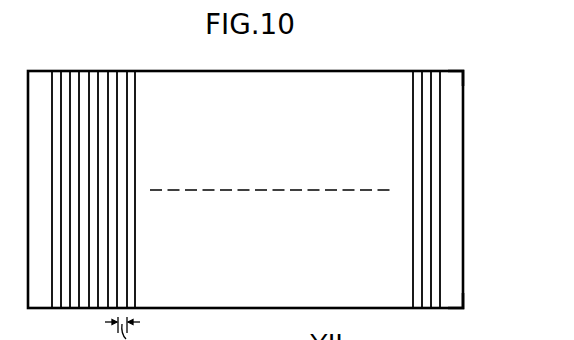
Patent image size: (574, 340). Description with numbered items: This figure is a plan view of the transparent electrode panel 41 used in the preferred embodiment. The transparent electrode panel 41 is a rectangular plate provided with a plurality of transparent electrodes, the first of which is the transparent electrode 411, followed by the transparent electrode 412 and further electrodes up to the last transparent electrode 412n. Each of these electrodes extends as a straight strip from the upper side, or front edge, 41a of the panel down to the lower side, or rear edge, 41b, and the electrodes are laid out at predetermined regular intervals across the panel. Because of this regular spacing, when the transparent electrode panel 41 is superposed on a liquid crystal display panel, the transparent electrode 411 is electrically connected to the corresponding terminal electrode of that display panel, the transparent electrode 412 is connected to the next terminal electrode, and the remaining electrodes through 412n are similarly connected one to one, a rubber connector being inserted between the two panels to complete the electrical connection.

The transparent electrode panel 41 is at (463, 178).
The transparent electrode 411 is at (55, 71).
The transparent electrode 412 is at (78, 71).
The transparent electrode 412n is at (438, 71).
The upper side (front edge) 41a is at (462, 73).
The lower side (rear edge) 41b is at (457, 303).